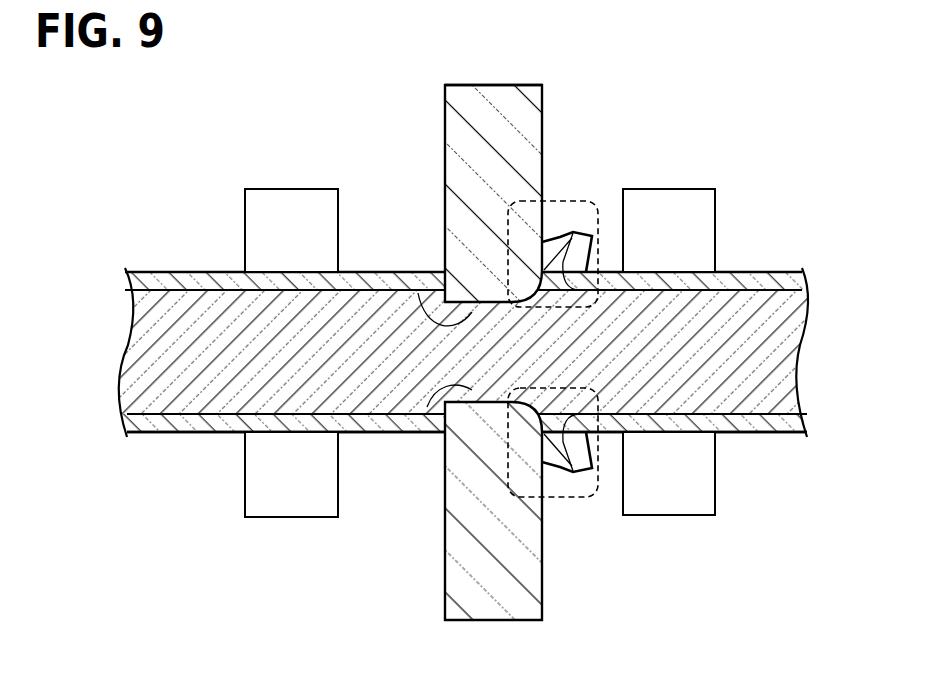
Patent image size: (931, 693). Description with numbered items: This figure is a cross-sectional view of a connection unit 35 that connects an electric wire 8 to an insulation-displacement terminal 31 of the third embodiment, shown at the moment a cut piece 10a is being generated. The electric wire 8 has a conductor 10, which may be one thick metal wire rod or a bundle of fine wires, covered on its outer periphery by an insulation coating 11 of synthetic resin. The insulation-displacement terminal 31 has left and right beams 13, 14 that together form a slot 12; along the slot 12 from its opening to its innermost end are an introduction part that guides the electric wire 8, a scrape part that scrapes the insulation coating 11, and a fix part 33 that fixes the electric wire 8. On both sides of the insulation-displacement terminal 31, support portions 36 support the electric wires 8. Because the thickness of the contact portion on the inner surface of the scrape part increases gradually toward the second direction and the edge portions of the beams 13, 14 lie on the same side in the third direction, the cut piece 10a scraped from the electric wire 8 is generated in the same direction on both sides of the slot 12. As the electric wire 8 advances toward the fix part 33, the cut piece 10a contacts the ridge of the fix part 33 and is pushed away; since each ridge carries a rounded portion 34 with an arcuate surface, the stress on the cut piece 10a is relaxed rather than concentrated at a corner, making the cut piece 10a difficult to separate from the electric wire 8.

The electric wire 8 is at (178, 445).
The conductor 10 is at (183, 308).
The cut piece 10a is at (572, 203).
The insulation coating 11 is at (358, 270).
The slot 12 is at (427, 407).
The beam 13 is at (532, 590).
The beam 14 is at (532, 128).
The insulation-displacement terminal 31 is at (553, 90).
The fix part 33 is at (418, 293).
The rounded portion 34 is at (548, 270).
The connection unit 35 is at (412, 150).
The support portion 36 is at (262, 200).